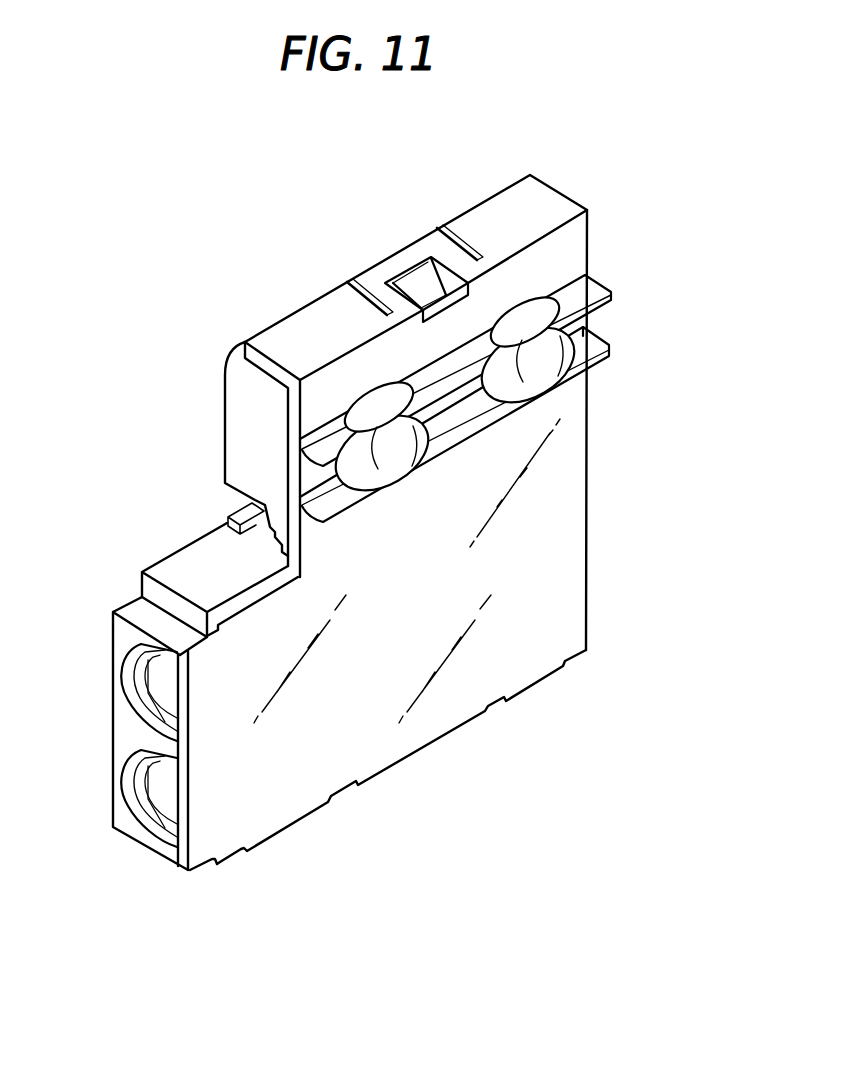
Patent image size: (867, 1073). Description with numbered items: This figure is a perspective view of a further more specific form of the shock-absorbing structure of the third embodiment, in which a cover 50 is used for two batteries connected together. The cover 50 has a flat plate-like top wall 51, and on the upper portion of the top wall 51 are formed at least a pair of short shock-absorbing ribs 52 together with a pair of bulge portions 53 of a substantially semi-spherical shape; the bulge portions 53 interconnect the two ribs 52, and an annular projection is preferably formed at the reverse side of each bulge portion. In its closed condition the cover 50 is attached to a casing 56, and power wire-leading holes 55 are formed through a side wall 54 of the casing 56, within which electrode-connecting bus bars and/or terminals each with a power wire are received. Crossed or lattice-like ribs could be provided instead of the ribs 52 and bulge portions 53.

The cover 50 is at (556, 578).
The top wall 51 is at (574, 482).
The shock-absorbing ribs 52 is at (608, 293).
The bulge portions 53 is at (546, 378).
The side wall 54 is at (134, 737).
The power wire-leading holes 55 is at (124, 684).
The casing 56 is at (191, 542).